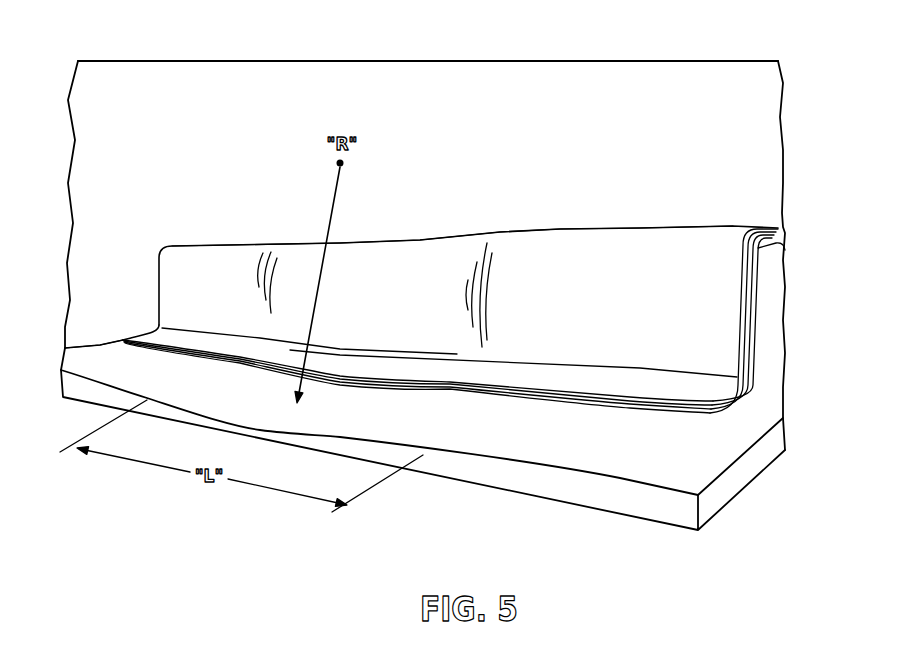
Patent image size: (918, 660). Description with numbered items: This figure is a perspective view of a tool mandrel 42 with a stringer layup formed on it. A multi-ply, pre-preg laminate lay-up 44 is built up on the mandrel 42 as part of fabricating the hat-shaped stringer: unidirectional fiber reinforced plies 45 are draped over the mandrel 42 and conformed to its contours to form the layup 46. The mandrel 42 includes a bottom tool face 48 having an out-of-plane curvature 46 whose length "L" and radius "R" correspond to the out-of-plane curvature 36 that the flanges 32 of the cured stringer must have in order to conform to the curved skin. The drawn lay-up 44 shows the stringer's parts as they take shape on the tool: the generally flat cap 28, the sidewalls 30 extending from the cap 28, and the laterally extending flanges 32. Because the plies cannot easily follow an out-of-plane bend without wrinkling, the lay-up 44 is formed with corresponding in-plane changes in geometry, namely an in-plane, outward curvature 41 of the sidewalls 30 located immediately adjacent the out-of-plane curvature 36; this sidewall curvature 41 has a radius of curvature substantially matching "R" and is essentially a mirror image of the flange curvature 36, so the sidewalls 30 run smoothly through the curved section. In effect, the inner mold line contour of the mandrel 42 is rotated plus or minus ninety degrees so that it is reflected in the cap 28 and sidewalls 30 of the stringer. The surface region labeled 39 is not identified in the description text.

The cap 28 is at (740, 236).
The top surface of rail 39 is at (372, 231).
The outward curvature of the sidewalls 41 is at (405, 326).
The out-of-plane curvature 36 is at (348, 375).
The out-of-plane curvature of the bottom tool face 46 is at (277, 408).
The tool mandrel 42 is at (731, 522).
The bottom tool face 48 is at (565, 435).
The laminate lay-up 44 is at (720, 300).
The sidewalls 30 is at (722, 342).
The flanges 32 is at (707, 393).
The unidirectional fiber reinforced plies 45 is at (781, 227).